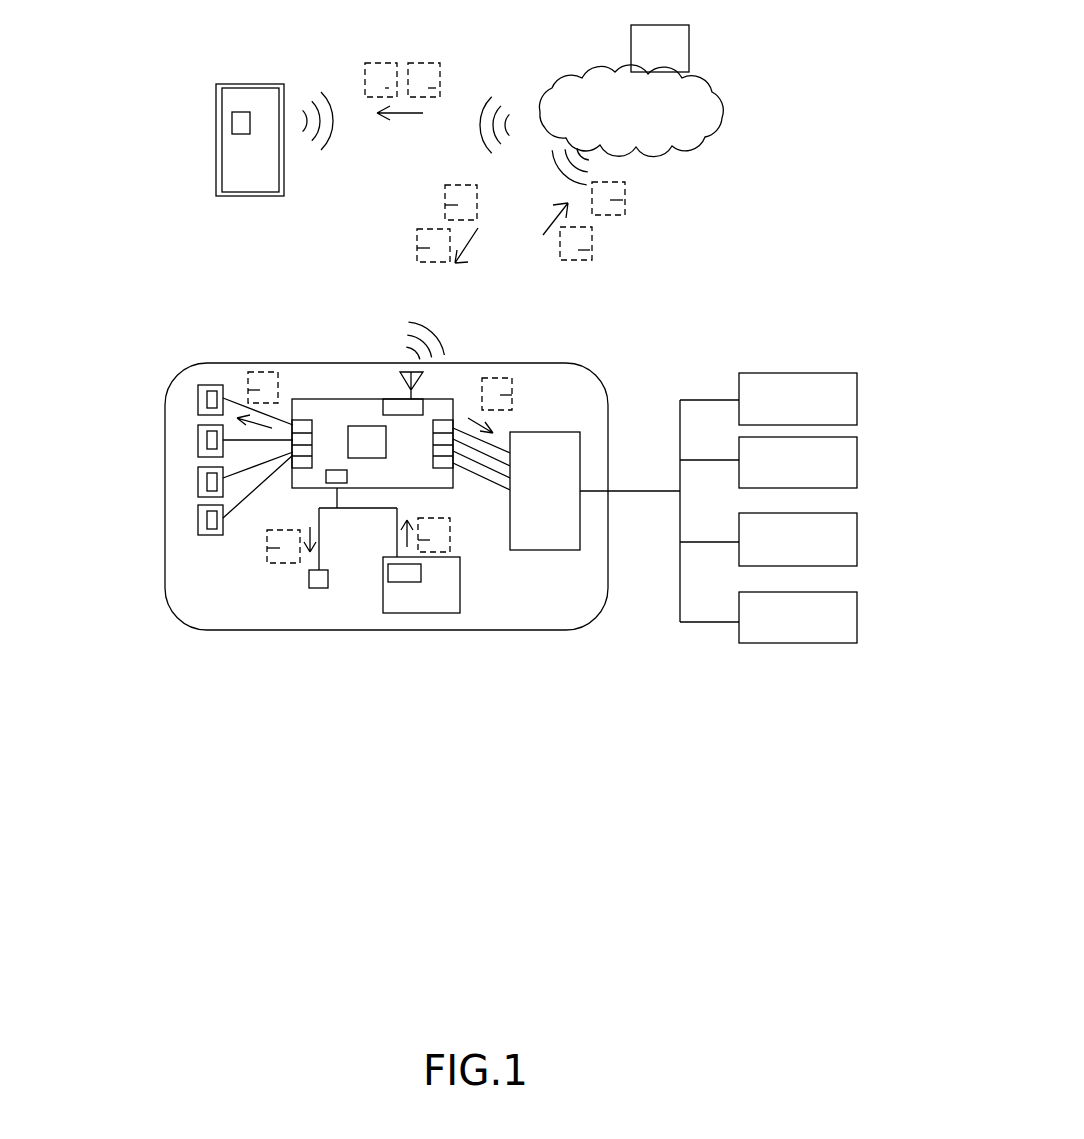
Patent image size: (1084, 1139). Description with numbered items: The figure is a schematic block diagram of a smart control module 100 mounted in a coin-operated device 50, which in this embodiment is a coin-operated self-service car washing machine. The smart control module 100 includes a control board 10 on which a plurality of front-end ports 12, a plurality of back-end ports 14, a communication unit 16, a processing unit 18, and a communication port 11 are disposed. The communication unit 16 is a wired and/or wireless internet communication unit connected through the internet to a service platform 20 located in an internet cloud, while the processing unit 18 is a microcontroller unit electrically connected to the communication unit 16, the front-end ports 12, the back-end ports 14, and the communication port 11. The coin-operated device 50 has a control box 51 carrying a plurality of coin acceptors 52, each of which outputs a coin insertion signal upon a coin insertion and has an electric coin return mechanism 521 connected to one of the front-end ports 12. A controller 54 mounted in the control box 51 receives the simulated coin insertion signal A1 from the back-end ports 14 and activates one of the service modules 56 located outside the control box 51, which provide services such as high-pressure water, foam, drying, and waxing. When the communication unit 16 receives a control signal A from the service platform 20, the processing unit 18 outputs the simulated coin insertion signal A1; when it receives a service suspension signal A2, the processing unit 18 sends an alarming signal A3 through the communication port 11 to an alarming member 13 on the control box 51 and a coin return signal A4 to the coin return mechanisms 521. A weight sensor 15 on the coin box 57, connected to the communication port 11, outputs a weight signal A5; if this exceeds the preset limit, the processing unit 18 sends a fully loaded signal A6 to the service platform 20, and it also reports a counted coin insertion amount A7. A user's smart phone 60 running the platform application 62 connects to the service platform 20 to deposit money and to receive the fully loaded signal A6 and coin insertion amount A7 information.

The smart phone 60 is at (216, 92).
The platform application 62 is at (234, 124).
The fully loaded signal A6 is at (372, 72).
The coin insertion amount A7 is at (437, 74).
The control signal A is at (445, 200).
The service suspension signal A2 is at (422, 245).
The service platform 20 is at (716, 93).
The coin-operated device 50 is at (152, 424).
The control box 51 is at (610, 404).
The coin acceptors 52 is at (198, 397).
The electric coin return mechanism 521 is at (212, 392).
The coin return signal A4 is at (260, 368).
The control board 10 is at (350, 399).
The communication port 11 is at (334, 470).
The front-end ports 12 is at (302, 466).
The back-end ports 14 is at (440, 425).
The communication unit 16 is at (395, 407).
The processing unit 18 is at (370, 447).
The alarming member 13 is at (318, 579).
The weight sensor 15 is at (403, 577).
The coin box 57 is at (400, 605).
The weight signal A5 is at (445, 548).
The alarming signal A3 is at (267, 548).
The simulated coin insertion signal A1 is at (517, 388).
The smart control module 100 is at (460, 505).
The controller 54 is at (560, 515).
The service modules 56 is at (845, 402).